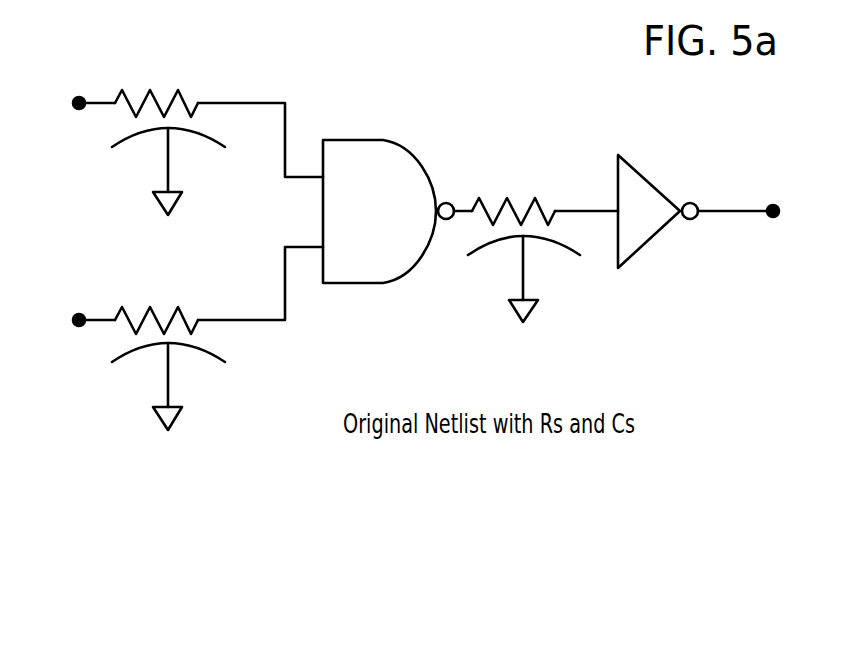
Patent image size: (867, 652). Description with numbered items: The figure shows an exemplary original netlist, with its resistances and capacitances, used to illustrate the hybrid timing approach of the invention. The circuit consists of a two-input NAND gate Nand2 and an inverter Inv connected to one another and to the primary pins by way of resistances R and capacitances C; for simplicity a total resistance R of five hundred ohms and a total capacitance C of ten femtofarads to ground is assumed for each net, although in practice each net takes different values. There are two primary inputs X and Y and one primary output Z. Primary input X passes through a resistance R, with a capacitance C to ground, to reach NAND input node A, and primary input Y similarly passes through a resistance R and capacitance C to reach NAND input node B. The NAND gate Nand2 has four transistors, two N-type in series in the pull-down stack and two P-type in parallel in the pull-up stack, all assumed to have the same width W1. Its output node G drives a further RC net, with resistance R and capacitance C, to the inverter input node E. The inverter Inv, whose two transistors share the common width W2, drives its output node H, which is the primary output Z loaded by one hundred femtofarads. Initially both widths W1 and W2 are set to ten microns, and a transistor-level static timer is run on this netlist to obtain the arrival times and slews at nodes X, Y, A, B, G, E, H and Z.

The primary input X is at (80, 108).
The primary input Y is at (79, 324).
The resistance R is at (335, 195).
The capacitance C is at (346, 279).
The node A is at (260, 140).
The node B is at (260, 283).
The 2-input NAND gate Nand2 is at (377, 193).
The transistor width w1 W1 is at (365, 205).
The node G is at (455, 194).
The node E is at (586, 197).
The inverter Inv is at (644, 192).
The transistor width w2 W2 is at (640, 208).
The node H is at (727, 198).
The primary output Z is at (787, 207).